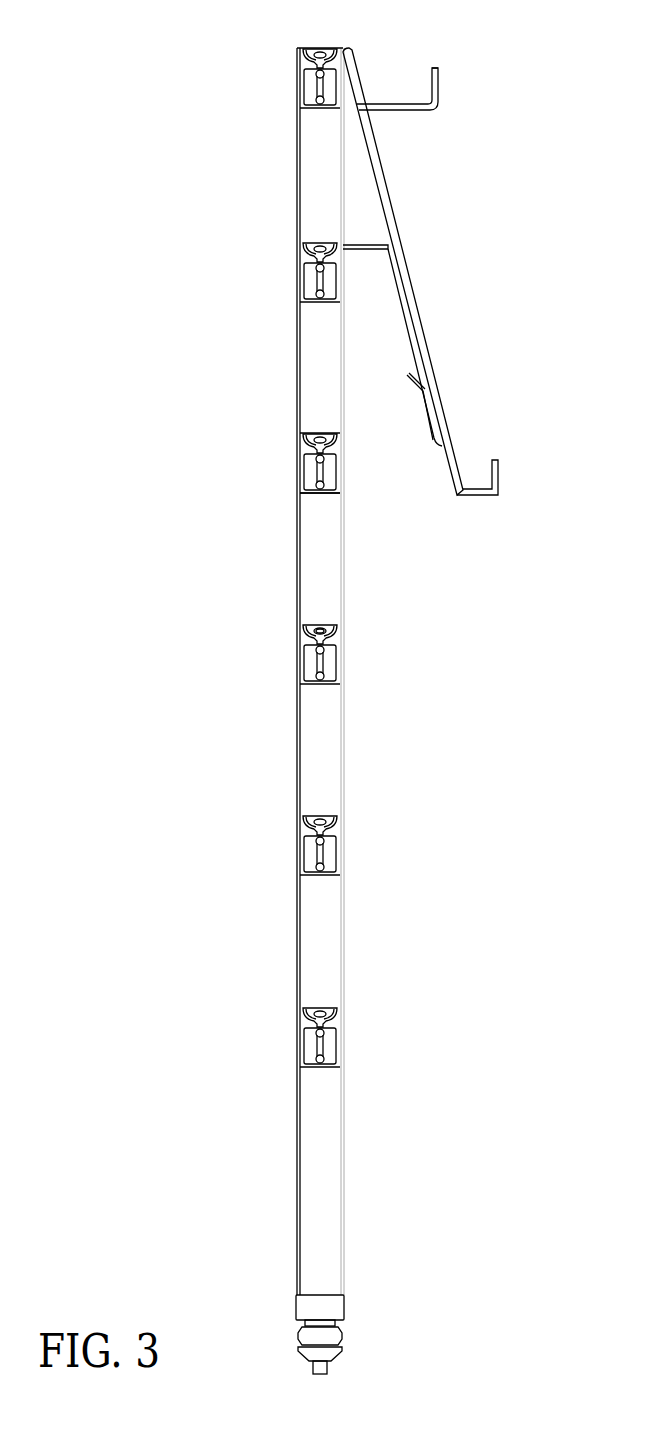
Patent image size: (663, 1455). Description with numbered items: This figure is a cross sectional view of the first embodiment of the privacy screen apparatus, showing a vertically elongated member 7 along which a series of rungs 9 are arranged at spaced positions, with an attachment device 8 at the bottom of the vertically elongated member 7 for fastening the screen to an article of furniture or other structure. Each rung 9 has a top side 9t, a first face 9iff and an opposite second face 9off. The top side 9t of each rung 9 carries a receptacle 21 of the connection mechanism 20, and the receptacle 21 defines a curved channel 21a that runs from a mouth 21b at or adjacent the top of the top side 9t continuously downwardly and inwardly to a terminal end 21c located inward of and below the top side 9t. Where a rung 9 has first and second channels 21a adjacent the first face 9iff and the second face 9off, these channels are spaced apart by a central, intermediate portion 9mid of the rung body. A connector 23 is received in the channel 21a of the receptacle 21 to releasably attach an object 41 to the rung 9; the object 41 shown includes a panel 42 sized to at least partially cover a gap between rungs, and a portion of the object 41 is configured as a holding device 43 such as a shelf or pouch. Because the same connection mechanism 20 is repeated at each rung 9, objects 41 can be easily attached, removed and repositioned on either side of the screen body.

The connection mechanism 20 is at (274, 40).
The receptacle 21 is at (287, 92).
The curved channel 21a is at (332, 636).
The mouth 21b is at (303, 625).
The terminal end 21c is at (328, 833).
The vertically elongated member 7 is at (298, 392).
The rung 9 is at (299, 270).
The top side 9t is at (318, 50).
The first face 9iff is at (343, 485).
The second face 9off is at (298, 578).
The central intermediate portion 9mid is at (320, 815).
The object 41 is at (462, 84).
The panel 42 is at (393, 229).
The holding device 43 is at (432, 120).
The connector 23 is at (364, 79).
The attachment device 8 is at (383, 1318).